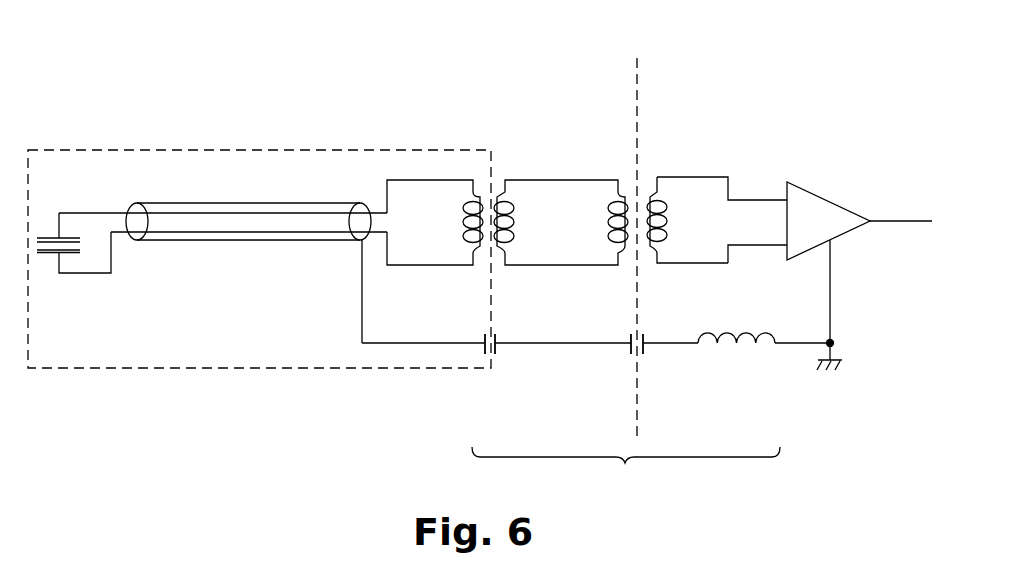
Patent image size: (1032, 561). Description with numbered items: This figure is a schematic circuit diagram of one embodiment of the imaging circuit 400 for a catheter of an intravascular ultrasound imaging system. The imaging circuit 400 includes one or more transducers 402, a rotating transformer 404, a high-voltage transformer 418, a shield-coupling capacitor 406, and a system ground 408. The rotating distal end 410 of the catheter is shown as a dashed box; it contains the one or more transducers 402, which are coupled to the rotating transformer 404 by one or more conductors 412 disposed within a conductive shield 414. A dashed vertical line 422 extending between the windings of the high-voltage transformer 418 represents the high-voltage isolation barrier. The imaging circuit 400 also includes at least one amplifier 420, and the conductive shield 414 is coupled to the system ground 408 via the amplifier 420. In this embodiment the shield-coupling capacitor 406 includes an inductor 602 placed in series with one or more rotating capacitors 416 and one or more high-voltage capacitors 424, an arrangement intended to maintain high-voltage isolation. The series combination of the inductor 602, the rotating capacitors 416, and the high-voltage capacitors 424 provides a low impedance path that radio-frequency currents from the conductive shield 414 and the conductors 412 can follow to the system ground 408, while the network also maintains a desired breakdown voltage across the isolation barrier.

The imaging circuit 400 is at (780, 122).
The transducers 402 is at (69, 294).
The rotating transformer 404 is at (539, 153).
The shield-coupling capacitor 406 is at (626, 472).
The system ground 408 is at (860, 329).
The rotating distal end 410 is at (373, 150).
The conductors 412 is at (291, 213).
The conductive shield 414 is at (188, 203).
The rotating capacitors 416 is at (505, 376).
The high-voltage transformer 418 is at (668, 155).
The amplifier 420 is at (861, 179).
The dashed vertical line 422 is at (624, 81).
The high-voltage capacitors 424 is at (646, 376).
The inductor 602 is at (743, 363).